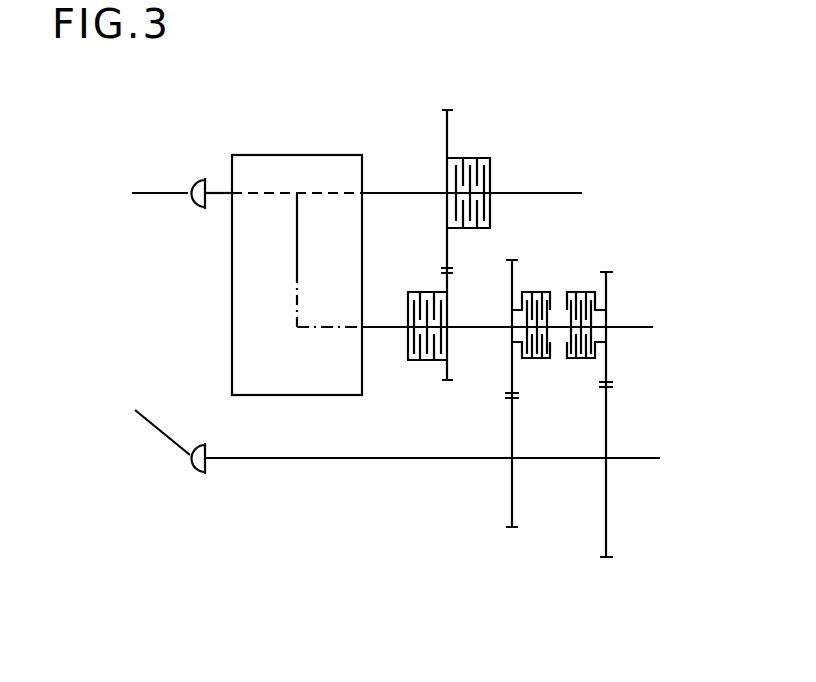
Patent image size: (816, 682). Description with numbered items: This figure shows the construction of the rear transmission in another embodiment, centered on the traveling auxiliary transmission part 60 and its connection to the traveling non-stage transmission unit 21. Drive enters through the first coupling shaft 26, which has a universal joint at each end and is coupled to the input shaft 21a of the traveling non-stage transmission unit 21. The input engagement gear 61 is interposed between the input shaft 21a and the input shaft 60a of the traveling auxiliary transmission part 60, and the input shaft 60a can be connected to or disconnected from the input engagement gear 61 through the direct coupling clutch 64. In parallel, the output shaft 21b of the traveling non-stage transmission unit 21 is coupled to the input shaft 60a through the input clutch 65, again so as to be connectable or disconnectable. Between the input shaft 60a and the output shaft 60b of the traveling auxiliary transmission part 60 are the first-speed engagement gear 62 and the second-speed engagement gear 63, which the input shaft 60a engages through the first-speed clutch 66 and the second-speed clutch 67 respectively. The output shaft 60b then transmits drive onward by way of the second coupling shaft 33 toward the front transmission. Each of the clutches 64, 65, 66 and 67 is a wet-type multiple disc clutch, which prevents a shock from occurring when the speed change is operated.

The first coupling shaft 26 is at (160, 193).
The traveling non-stage transmission unit 21 is at (288, 165).
The input shaft of the traveling non-stage transmission unit 21a is at (412, 192).
The output shaft of the traveling non-stage transmission unit 21b is at (378, 325).
The traveling auxiliary transmission part 60 is at (568, 172).
The input engagement gear 61 is at (462, 262).
The direct coupling clutch 64 is at (490, 173).
The input clutch 65 is at (430, 360).
The input shaft of the traveling auxiliary transmission part 60a is at (627, 327).
The second-speed engagement gear 63 is at (495, 400).
The second-speed clutch 67 is at (533, 358).
The first-speed clutch 66 is at (575, 358).
The first-speed engagement gear 62 is at (618, 383).
The output shaft of the traveling auxiliary transmission part 60b is at (638, 458).
The second coupling shaft 33 is at (160, 438).